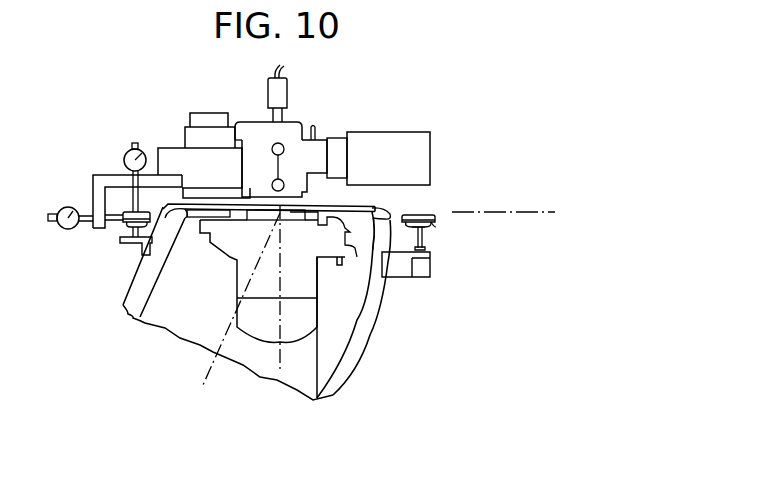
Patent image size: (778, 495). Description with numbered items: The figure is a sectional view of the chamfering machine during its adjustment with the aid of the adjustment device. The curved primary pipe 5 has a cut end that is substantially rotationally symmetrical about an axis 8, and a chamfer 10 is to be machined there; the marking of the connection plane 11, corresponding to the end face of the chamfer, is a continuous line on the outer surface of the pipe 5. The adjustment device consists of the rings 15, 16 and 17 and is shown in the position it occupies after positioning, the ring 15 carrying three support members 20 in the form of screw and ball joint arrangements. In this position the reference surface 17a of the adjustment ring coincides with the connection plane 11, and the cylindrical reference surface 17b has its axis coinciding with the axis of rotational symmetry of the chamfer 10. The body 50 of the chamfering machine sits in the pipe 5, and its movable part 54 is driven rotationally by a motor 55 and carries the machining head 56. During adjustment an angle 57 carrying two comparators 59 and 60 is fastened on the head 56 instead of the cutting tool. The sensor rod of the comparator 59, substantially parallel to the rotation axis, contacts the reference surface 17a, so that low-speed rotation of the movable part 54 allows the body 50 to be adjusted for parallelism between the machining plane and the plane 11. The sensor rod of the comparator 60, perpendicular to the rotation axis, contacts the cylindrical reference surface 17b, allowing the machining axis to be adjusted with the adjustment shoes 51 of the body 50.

The primary pipe 5 is at (358, 330).
The axis 8 is at (222, 388).
The chamfer 10 is at (410, 207).
The connection plane marking 11 is at (518, 208).
The ring 15 is at (413, 277).
The ring 16 is at (436, 227).
The adjustment ring 17 is at (438, 208).
The reference surface 17a is at (127, 212).
The cylindrical reference surface 17b is at (127, 226).
The support member 20 is at (437, 240).
The body of the chamfering machine 50 is at (300, 327).
The adjustment shoe 51 is at (355, 303).
The movable part 54 is at (307, 160).
The motor 55 is at (412, 140).
The machining head 56 is at (200, 173).
The angle 57 is at (93, 193).
The comparator 59 is at (146, 158).
The comparator 60 is at (60, 228).